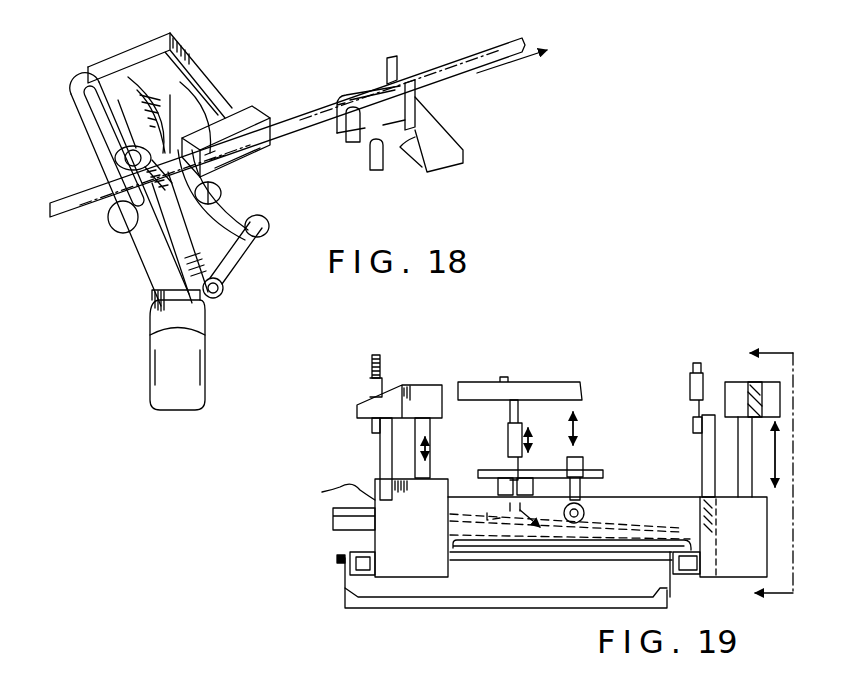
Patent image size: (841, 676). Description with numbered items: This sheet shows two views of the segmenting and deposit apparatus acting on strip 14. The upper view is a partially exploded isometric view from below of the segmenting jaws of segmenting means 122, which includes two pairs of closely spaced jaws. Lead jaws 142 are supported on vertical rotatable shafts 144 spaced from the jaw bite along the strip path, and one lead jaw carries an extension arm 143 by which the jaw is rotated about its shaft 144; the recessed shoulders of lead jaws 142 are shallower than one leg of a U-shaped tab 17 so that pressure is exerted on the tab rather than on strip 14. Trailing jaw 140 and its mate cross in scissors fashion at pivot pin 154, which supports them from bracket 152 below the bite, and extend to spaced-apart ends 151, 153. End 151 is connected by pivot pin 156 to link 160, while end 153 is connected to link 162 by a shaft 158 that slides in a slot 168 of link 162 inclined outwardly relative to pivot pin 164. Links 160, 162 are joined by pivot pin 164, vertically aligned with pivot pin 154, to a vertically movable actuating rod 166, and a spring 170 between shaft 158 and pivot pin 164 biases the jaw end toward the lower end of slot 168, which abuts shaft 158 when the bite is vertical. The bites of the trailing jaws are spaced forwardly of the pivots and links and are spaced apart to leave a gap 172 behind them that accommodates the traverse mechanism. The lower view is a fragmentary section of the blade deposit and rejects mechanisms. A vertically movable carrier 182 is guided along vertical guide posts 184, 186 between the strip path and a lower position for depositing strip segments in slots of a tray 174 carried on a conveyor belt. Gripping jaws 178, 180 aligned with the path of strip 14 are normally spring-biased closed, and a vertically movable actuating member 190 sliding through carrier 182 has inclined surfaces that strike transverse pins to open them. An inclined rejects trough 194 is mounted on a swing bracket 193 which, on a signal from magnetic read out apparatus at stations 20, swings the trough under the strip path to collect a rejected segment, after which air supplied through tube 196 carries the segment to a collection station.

In FIG. 18, the strip 14 is at (484, 50).
In FIG. 19, the strip 14 is at (490, 556).
In FIG. 19, the U-shaped tab 17 is at (336, 560).
In FIG. 19, the stations 20 is at (772, 473).
In FIG. 18, the segmenting means 122 is at (289, 74).
In FIG. 18, the trailing jaw 140 is at (272, 160).
In FIG. 18, the lead jaws 142 is at (410, 100).
In FIG. 18, the extension arm 143 is at (440, 143).
In FIG. 18, the vertical rotatable shafts 144 is at (383, 168).
In FIG. 18, the end of jaw 151 is at (235, 216).
In FIG. 18, the bracket 152 is at (117, 55).
In FIG. 18, the end of jaw 153 is at (130, 147).
In FIG. 18, the pivot pin 154 is at (221, 193).
In FIG. 18, the pivot pin 156 is at (270, 228).
In FIG. 18, the shaft 158 is at (118, 176).
In FIG. 18, the link 160 is at (245, 271).
In FIG. 18, the link 162 is at (186, 265).
In FIG. 18, the pivot pin 164 is at (224, 288).
In FIG. 18, the actuating rod 166 is at (186, 366).
In FIG. 18, the slot 168 is at (85, 105).
In FIG. 18, the spring 170 is at (110, 222).
In FIG. 18, the gap 172 is at (190, 120).
In FIG. 19, the tray 174 is at (667, 598).
In FIG. 19, the gripping jaw 178 is at (368, 565).
In FIG. 19, the gripping jaw 180 is at (673, 567).
In FIG. 19, the carrier 182 is at (633, 497).
In FIG. 19, the vertical guide post 184 is at (430, 454).
In FIG. 19, the vertical guide post 186 is at (746, 490).
In FIG. 19, the actuating member 190 is at (380, 450).
In FIG. 19, the swing bracket 193 is at (543, 542).
In FIG. 19, the rejects trough 194 is at (335, 528).
In FIG. 19, the tube 196 is at (331, 489).